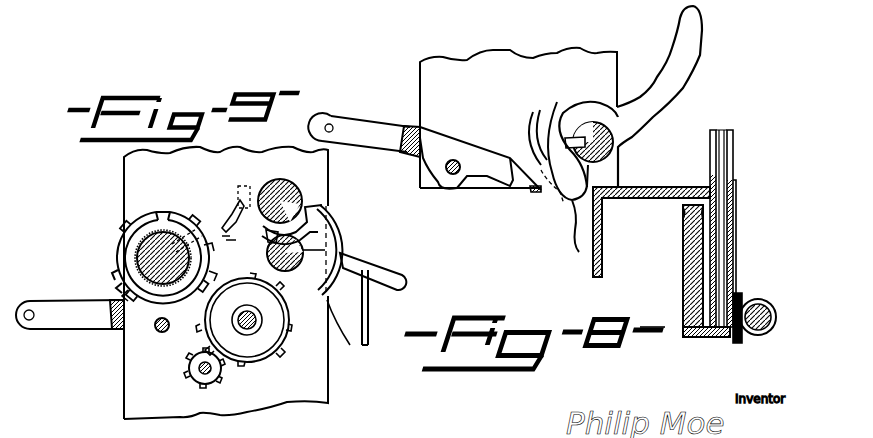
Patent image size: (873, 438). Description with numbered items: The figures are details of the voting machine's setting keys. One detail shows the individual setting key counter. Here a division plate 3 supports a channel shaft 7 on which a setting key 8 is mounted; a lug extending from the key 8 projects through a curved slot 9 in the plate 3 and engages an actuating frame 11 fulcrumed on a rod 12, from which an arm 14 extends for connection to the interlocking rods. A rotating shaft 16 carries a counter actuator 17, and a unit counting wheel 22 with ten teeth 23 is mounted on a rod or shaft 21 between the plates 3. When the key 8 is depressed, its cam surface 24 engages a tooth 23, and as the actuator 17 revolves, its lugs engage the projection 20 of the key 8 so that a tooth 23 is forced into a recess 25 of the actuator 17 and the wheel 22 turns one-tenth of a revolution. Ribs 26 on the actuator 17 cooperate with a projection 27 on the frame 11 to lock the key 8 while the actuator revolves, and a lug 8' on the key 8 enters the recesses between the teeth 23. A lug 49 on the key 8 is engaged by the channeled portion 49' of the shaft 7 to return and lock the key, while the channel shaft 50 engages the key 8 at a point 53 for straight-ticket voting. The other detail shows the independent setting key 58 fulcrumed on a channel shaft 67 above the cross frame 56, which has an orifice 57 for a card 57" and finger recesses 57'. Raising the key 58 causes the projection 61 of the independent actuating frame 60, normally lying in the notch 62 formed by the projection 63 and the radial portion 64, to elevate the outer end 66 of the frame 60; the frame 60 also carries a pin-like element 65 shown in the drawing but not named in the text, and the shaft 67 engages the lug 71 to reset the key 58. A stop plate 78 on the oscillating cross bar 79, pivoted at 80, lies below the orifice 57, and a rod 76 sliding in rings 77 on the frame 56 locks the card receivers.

In FIG. 9, the division plate 3 is at (226, 283).
In FIG. 8, the division plate 3 is at (518, 118).
In FIG. 9, the channel shaft 7 is at (299, 262).
In FIG. 9, the setting key 8 is at (344, 234).
In FIG. 9, the lug 8' is at (260, 233).
In FIG. 9, the curved slot 9 is at (226, 218).
In FIG. 9, the actuating frame 11 is at (112, 312).
In FIG. 9, the rod 12 is at (158, 333).
In FIG. 9, the arm 14 is at (54, 322).
In FIG. 9, the rotating shaft 16 is at (145, 250).
In FIG. 9, the counter actuator 17 is at (118, 270).
In FIG. 9, the projection 20 is at (209, 259).
In FIG. 9, the rod or shaft 21 is at (249, 311).
In FIG. 9, the unit counting wheel 22 is at (244, 319).
In FIG. 9, the tooth 23 is at (262, 367).
In FIG. 9, the cam surface 24 is at (366, 346).
In FIG. 9, the recess 25 is at (166, 212).
In FIG. 9, the rib 26 is at (118, 243).
In FIG. 9, the projection 27 is at (121, 296).
In FIG. 9, the lug 49 is at (362, 244).
In FIG. 9, the slotted or channeled portion 49' is at (378, 264).
In FIG. 9, the channel shaft 50 is at (300, 192).
In FIG. 9, the point 53 is at (318, 218).
In FIG. 8, the cross frame 56 is at (737, 268).
In FIG. 8, the orifice 57 is at (746, 228).
In FIG. 8, the finger recess 57' is at (753, 228).
In FIG. 8, the independent setting key 58 is at (670, 72).
In FIG. 8, the independent actuating frame 60 is at (434, 142).
In FIG. 8, the projection 61 is at (533, 192).
In FIG. 8, the notch 62 is at (562, 216).
In FIG. 8, the projection 63 is at (582, 238).
In FIG. 8, the radial portion 64 is at (553, 197).
In FIG. 8, the pin 65 is at (455, 176).
In FIG. 8, the outer end 66 is at (368, 128).
In FIG. 8, the channel shaft 67 is at (614, 157).
In FIG. 8, the lug 71 is at (578, 136).
In FIG. 8, the rod 76 is at (750, 337).
In FIG. 8, the ring 77 is at (776, 292).
In FIG. 8, the stop plate 78 is at (699, 338).
In FIG. 8, the oscillating cross bar 79 is at (682, 266).
In FIG. 8, the pivot 80 is at (681, 214).